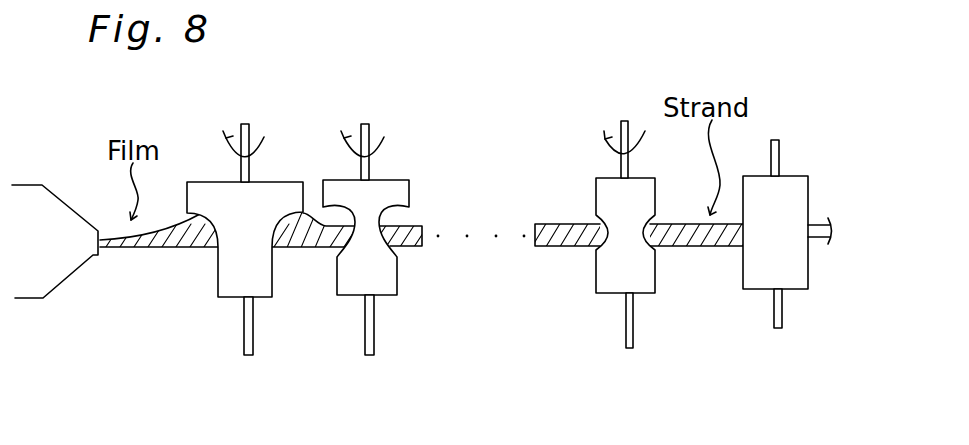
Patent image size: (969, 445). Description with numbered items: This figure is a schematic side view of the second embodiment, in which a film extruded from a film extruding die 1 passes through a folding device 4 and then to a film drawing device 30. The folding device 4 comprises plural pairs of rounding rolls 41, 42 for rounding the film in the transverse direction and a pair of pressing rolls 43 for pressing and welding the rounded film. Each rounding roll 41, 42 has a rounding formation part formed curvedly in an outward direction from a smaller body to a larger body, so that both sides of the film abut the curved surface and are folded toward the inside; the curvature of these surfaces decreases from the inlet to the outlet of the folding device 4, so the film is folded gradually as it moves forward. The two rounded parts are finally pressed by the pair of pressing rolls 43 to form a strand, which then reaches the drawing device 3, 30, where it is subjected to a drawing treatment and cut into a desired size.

The extrusion die 1 is at (36, 197).
The drawing device 3 is at (805, 166).
The folding device 4 is at (612, 118).
The film drawing device 30 is at (792, 282).
The rounding roll 41 is at (232, 288).
The rounding roll 42 is at (385, 290).
The pressing roll 43 is at (643, 297).